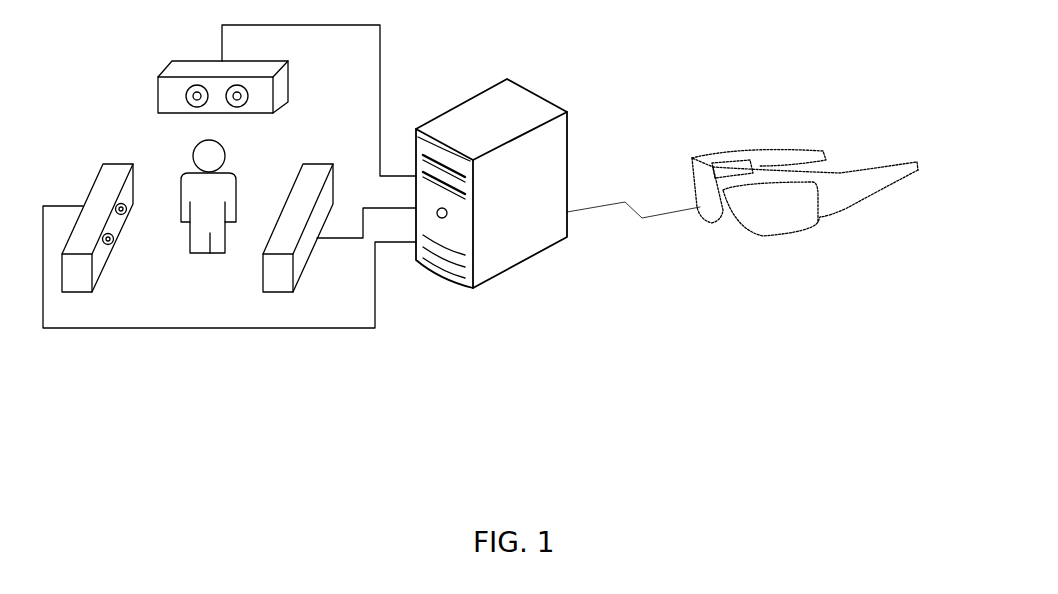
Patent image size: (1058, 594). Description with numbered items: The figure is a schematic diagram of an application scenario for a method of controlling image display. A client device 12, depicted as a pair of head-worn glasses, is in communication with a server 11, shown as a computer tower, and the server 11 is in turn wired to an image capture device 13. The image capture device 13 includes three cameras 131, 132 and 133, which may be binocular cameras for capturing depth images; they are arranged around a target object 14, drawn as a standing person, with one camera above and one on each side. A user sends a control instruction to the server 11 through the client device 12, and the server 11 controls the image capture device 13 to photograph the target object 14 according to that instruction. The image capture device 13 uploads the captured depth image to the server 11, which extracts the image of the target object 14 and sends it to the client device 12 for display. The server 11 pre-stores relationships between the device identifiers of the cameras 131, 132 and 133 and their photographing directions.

The server 11 is at (567, 120).
The client device 12 is at (918, 170).
The image capture device 13 is at (93, 407).
The camera 131 is at (170, 113).
The camera 132 is at (77, 292).
The camera 133 is at (272, 292).
The target object 14 is at (202, 253).